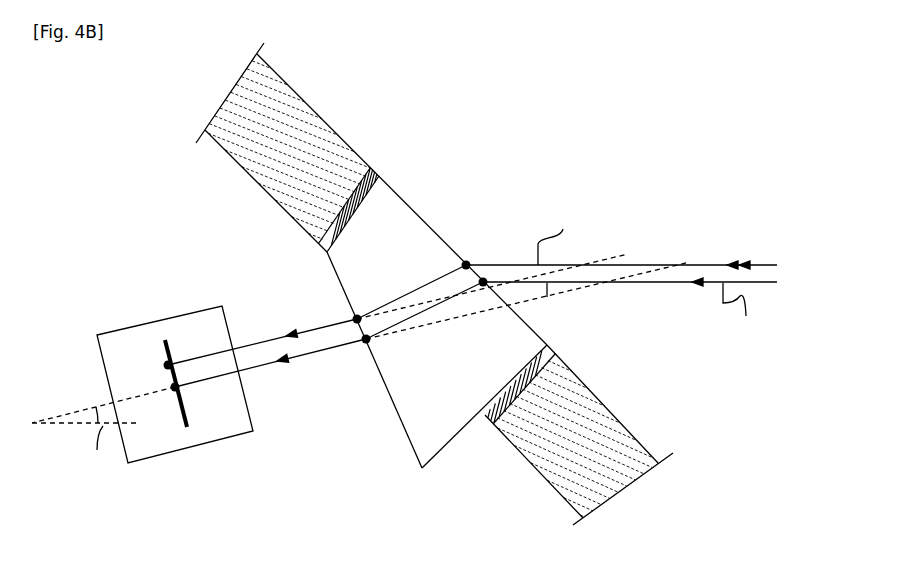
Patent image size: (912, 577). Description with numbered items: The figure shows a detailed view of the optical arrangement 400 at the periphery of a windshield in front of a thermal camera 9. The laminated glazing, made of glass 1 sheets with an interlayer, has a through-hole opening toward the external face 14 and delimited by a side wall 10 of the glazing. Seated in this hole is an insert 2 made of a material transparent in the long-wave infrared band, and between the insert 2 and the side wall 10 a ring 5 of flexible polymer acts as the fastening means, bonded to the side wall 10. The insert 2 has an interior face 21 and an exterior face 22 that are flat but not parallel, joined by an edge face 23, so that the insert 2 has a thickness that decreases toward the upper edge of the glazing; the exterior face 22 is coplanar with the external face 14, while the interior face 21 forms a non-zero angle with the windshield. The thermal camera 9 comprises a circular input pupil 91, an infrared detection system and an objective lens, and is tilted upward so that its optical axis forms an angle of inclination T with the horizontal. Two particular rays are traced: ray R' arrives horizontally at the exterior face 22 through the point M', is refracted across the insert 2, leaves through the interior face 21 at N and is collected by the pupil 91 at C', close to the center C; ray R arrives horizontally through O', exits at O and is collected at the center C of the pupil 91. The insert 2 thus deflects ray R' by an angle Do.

The optical system 400 is at (200, 193).
The glass 1 is at (306, 104).
The external face 14 is at (288, 216).
The ring 5 is at (386, 190).
The side wall 10 is at (507, 377).
The insert 2 is at (407, 385).
The interior face 21 is at (400, 418).
The exterior face 22 is at (417, 213).
The edge face 23 is at (456, 444).
The thermal camera 9 is at (128, 328).
The pupil 91 is at (187, 412).